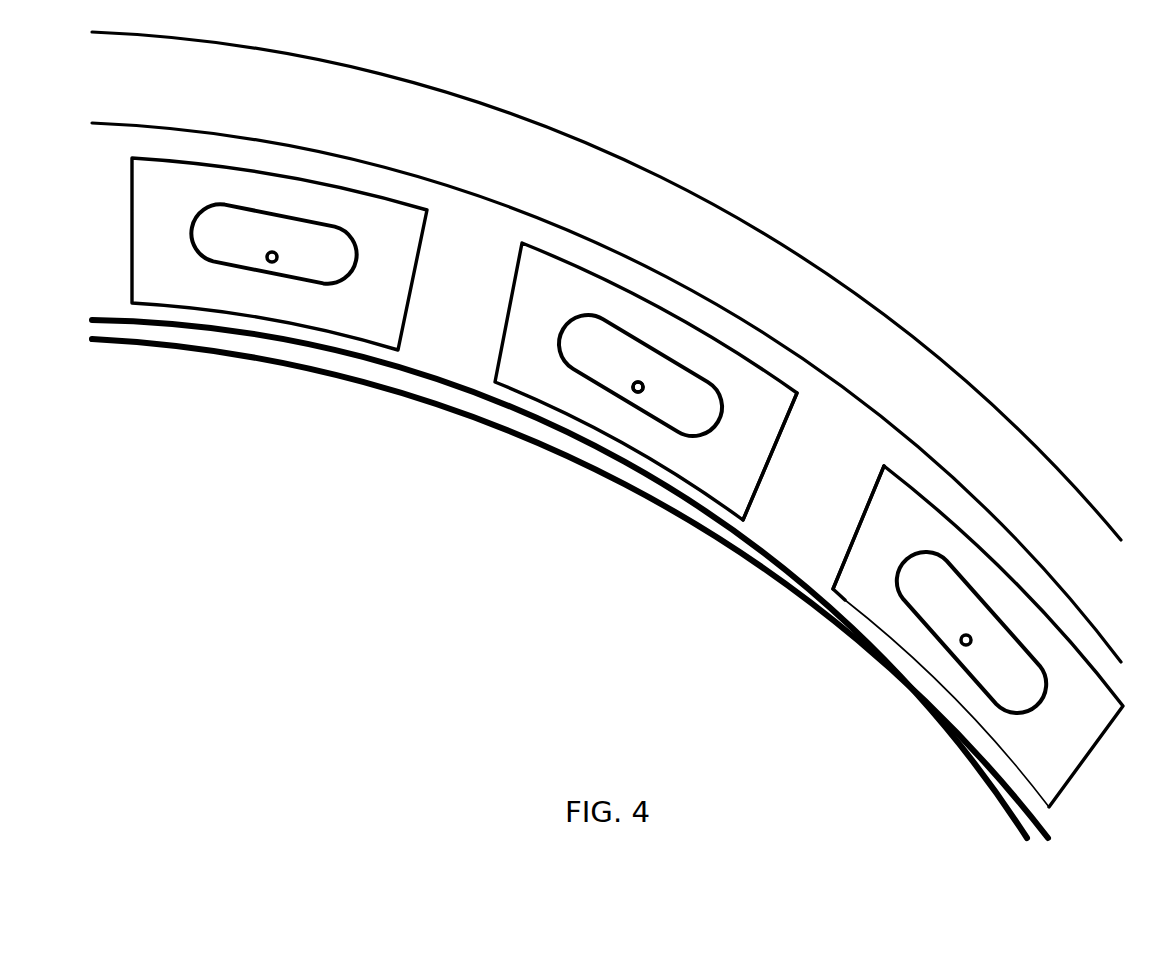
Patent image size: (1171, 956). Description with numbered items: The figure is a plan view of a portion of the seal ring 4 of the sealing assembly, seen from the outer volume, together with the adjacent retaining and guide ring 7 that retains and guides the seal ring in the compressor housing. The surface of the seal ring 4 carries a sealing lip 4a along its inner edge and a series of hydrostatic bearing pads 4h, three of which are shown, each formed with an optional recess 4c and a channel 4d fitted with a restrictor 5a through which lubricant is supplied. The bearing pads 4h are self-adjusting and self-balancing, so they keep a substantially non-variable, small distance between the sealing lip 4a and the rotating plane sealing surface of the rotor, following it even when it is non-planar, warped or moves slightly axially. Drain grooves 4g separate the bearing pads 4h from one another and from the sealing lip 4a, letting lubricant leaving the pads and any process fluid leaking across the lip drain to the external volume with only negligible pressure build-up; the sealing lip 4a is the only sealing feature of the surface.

The seal ring 4 is at (607, 403).
The retaining and guide ring 7 is at (543, 167).
The sealing lip 4a is at (445, 408).
The recess 4c is at (693, 390).
The channel 4d is at (795, 272).
The drain groove 4g is at (800, 520).
The hydrostatic bearing pad 4h is at (653, 302).
The restrictor 5a is at (646, 378).